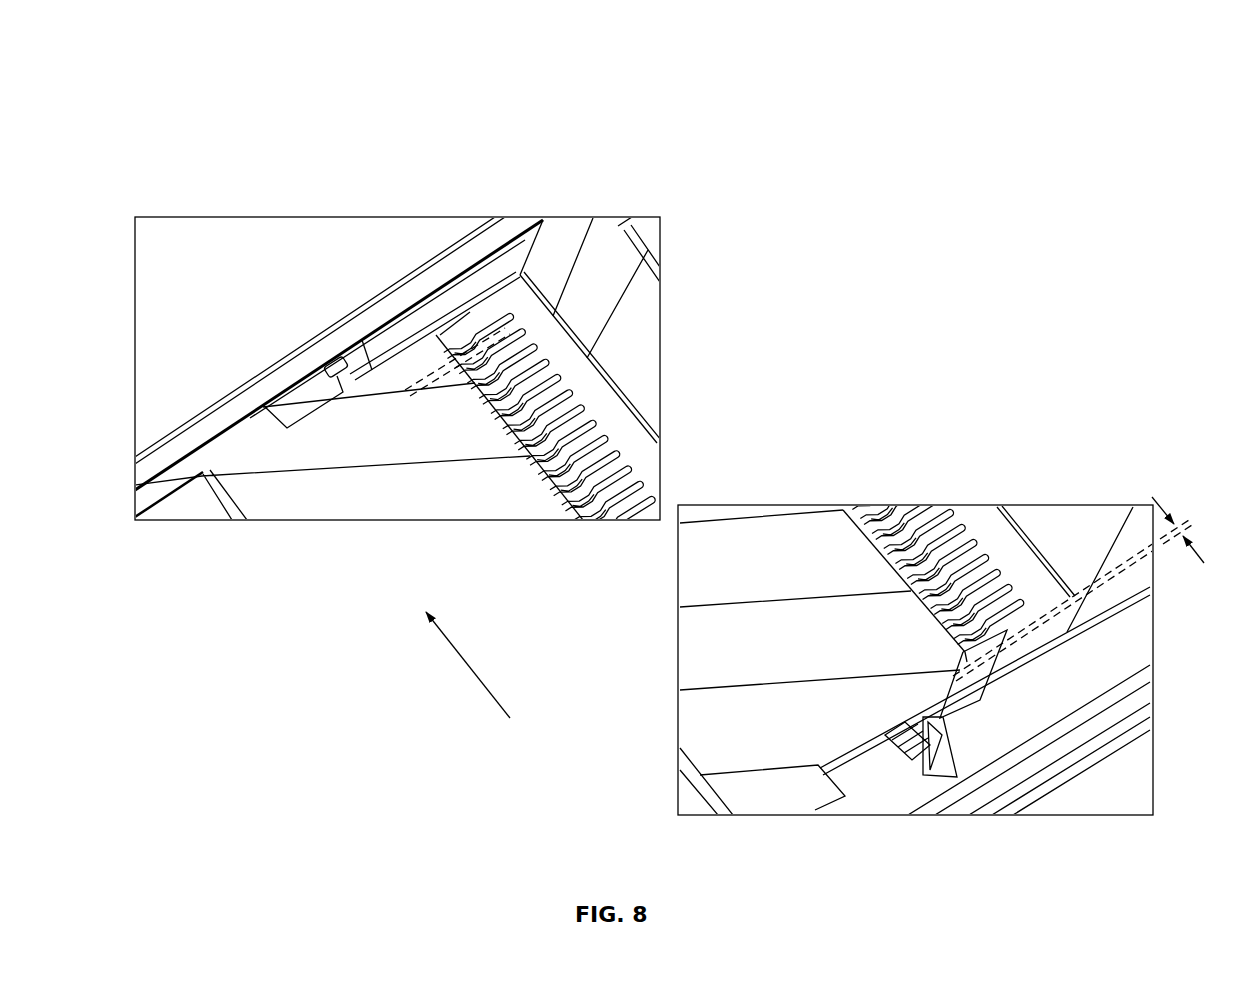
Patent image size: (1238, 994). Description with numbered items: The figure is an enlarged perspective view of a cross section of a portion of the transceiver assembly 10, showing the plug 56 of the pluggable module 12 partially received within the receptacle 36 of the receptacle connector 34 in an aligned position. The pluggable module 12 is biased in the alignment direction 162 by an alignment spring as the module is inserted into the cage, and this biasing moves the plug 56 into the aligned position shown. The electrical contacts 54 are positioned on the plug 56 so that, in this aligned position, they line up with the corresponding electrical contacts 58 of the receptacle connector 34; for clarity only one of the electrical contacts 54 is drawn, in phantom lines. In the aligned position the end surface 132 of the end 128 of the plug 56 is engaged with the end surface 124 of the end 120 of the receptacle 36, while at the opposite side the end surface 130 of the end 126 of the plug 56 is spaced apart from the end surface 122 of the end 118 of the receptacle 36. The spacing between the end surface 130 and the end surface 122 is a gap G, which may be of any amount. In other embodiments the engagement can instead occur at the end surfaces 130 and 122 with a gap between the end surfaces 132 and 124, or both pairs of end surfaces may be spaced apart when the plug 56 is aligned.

The transceiver assembly 10 is at (1022, 120).
The pluggable module 12 is at (181, 468).
The receptacle connector 34 is at (597, 270).
The receptacle 36 is at (478, 322).
The electrical contacts 54 is at (412, 340).
The plug 56 is at (290, 466).
The electrical contacts 58 is at (414, 305).
The end 118 is at (1050, 603).
The end 120 is at (526, 281).
The end surface 122 is at (1017, 623).
The end surface 124 is at (466, 335).
The end 126 is at (845, 768).
The end 128 is at (368, 360).
The end surface 130 is at (868, 748).
The end surface 132 is at (432, 358).
The alignment direction 162 is at (466, 663).
The gap G is at (1162, 500).